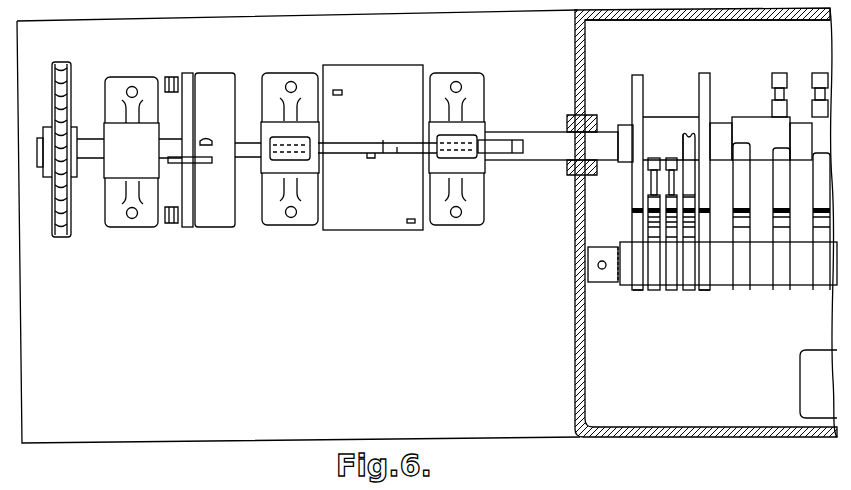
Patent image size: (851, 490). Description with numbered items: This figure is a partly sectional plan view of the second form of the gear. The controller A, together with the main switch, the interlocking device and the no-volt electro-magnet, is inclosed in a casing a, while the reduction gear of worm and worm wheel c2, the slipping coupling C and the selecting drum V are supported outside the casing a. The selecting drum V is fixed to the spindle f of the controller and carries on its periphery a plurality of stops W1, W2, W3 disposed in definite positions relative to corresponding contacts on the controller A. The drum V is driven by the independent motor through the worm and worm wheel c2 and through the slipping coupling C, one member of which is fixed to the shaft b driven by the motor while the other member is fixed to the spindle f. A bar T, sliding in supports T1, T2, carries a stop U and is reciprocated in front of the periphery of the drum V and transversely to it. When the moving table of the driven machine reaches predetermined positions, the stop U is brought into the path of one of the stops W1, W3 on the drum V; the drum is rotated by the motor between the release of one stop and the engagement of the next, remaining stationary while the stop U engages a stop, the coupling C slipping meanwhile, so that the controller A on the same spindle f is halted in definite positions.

The controller A is at (702, 222).
The casing a is at (808, 9).
The lever pin g is at (668, 123).
The worm wheel c2 is at (60, 222).
The shaft b is at (168, 142).
The slipping coupling C is at (201, 176).
The support T1 is at (282, 218).
The support T2 is at (457, 218).
The spindle of the controller f is at (262, 164).
The selecting drum V is at (370, 220).
The stop W1 is at (346, 80).
The stop W2 is at (372, 160).
The stop W3 is at (411, 224).
The stop U is at (383, 140).
The bar T is at (397, 147).